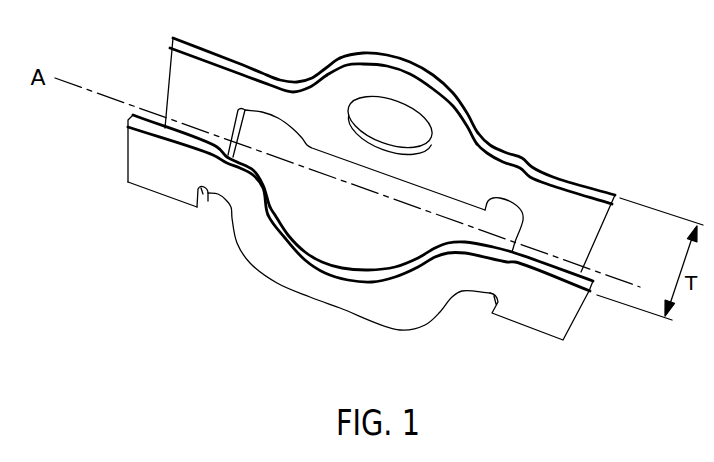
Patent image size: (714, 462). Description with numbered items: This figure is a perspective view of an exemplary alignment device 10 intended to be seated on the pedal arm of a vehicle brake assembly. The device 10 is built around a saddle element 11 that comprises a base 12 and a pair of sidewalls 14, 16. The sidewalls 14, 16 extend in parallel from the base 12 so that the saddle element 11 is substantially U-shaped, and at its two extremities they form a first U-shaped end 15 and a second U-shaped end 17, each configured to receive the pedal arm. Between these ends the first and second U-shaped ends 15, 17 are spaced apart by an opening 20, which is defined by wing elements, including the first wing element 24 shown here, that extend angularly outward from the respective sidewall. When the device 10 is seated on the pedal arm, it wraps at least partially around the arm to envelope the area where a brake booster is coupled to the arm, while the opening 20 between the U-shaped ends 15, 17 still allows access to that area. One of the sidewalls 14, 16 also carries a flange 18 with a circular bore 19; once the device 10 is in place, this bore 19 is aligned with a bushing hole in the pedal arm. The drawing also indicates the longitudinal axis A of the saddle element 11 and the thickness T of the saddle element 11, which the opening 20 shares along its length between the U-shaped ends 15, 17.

The alignment device 10 is at (559, 85).
The saddle element 11 is at (219, 55).
The base 12 is at (206, 202).
The sidewall 14 is at (174, 62).
The first U-shaped end 15 is at (155, 197).
The sidewall 16 is at (130, 152).
The second U-shaped end 17 is at (527, 327).
The flange 18 is at (413, 70).
The circular bore 19 is at (375, 113).
The opening 20 is at (338, 229).
The first wing element 24 is at (371, 304).